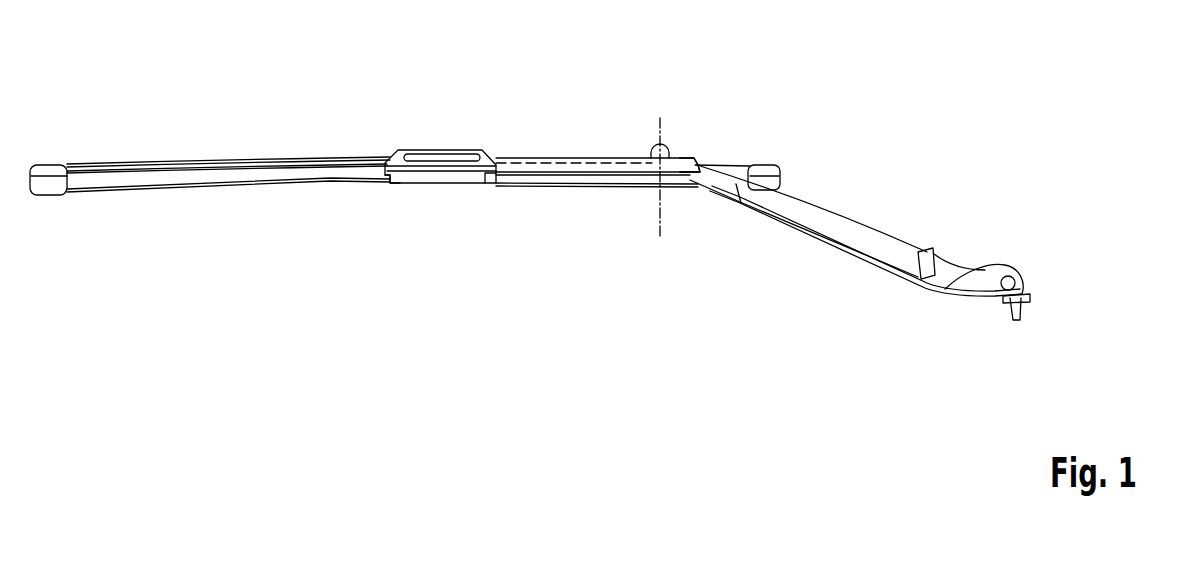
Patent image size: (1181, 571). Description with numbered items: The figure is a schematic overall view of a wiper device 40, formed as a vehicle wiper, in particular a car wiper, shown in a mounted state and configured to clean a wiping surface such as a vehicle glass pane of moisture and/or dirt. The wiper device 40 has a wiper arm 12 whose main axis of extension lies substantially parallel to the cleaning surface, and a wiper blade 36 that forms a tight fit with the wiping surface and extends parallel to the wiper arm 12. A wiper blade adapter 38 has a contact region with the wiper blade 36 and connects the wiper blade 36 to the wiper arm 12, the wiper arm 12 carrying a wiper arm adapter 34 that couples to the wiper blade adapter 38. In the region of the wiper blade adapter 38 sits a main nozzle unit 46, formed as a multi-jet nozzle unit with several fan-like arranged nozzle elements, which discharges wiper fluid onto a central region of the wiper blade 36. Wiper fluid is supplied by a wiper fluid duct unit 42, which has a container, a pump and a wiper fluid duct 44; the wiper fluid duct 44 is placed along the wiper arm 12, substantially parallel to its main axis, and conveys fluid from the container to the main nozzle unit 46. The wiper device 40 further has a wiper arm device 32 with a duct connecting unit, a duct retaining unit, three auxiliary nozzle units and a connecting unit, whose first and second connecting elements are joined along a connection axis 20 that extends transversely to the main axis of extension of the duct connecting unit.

The wiper arm 12 is at (578, 176).
The connection axis 20 is at (660, 236).
The wiper arm device 32 is at (645, 133).
The wiper arm adapter 34 is at (494, 186).
The wiper blade 36 is at (290, 168).
The wiper blade adapter 38 is at (409, 186).
The wiper device 40 is at (852, 66).
The wiper fluid duct unit 42 is at (853, 296).
The wiper fluid duct 44 is at (690, 158).
The main nozzle unit 46 is at (430, 152).